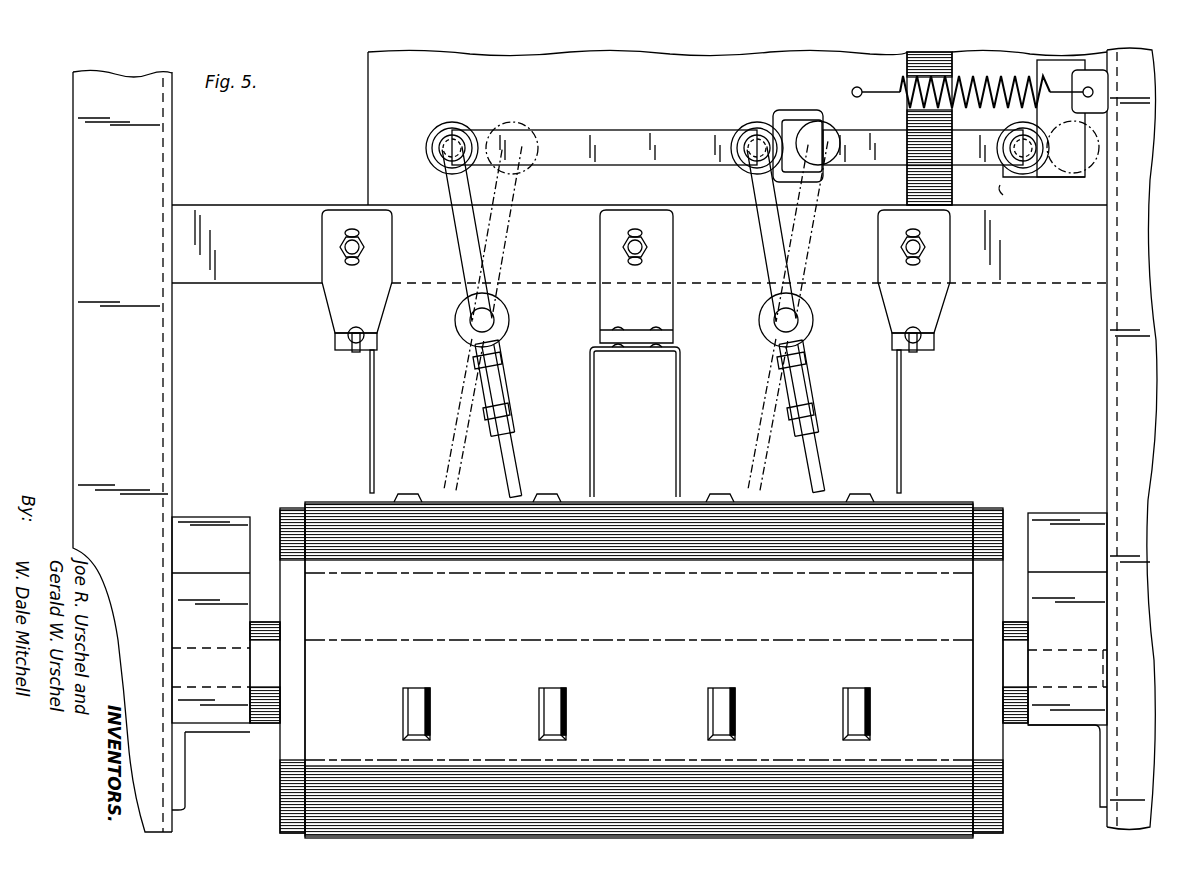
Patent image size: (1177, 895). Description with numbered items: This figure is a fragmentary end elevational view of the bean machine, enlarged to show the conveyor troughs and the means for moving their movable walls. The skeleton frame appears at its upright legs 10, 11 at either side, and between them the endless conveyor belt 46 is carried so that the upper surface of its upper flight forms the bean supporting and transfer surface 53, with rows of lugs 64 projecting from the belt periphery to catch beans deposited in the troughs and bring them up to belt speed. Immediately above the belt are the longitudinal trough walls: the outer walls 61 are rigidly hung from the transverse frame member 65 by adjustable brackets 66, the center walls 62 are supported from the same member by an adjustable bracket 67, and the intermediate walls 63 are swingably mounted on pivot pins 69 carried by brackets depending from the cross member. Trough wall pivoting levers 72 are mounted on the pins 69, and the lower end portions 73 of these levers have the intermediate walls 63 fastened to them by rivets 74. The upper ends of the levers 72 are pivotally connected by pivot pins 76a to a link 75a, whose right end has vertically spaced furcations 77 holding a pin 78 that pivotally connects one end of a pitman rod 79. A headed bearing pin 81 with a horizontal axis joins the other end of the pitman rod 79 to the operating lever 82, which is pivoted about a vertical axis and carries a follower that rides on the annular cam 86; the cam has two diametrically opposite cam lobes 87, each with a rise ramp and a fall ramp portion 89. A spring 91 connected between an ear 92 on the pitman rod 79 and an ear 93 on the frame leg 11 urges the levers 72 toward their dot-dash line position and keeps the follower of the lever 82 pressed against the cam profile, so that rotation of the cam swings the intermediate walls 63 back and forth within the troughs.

The upright leg 10 is at (80, 353).
The upright leg 11 is at (1125, 352).
The conveyor belt 46 is at (960, 499).
The bean supporting and transfer surface 53 is at (716, 496).
The outer conveyor trough wall 61 is at (370, 405).
The inner conveyor trough wall 62 is at (680, 440).
The intermediate conveyor trough wall 63 is at (513, 472).
The lug 64 is at (408, 494).
The transverse frame member 65 is at (232, 206).
The adjustable bracket 66 is at (332, 322).
The adjustable bracket 67 is at (620, 304).
The pivot pin 69 is at (478, 324).
The trough wall pivoting lever 72 is at (462, 272).
The lower end portion of lever 73 is at (488, 388).
The rivet 74 is at (500, 358).
The link 75a is at (577, 130).
The pivot pin 76a is at (452, 148).
The furcation 77 is at (790, 112).
The pin 78 is at (814, 110).
The pitman rod 79 is at (893, 166).
The headed bearing pin 81 is at (1023, 168).
The operating lever 82 is at (1080, 170).
The annular cam 86 is at (1003, 196).
The cam lobe 87 is at (1003, 178).
The fall ramp portion 89 is at (1042, 66).
The spring 91 is at (1008, 88).
The ear 92 is at (858, 88).
The ear 93 is at (1100, 84).